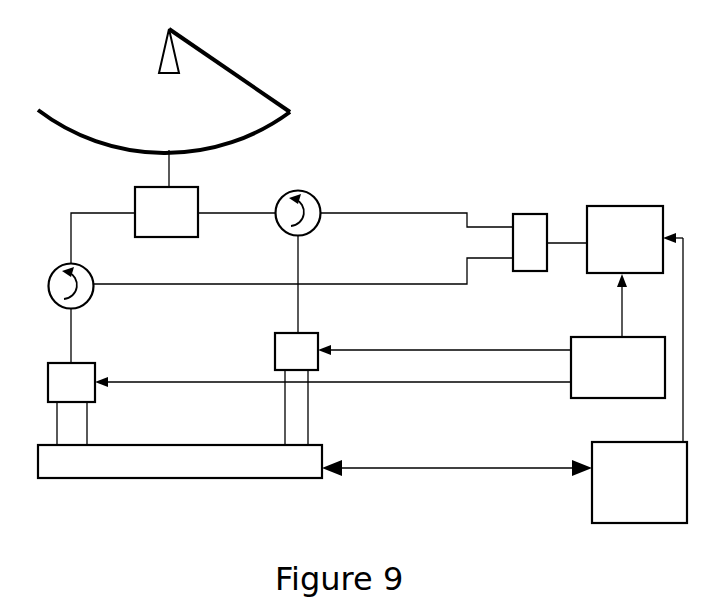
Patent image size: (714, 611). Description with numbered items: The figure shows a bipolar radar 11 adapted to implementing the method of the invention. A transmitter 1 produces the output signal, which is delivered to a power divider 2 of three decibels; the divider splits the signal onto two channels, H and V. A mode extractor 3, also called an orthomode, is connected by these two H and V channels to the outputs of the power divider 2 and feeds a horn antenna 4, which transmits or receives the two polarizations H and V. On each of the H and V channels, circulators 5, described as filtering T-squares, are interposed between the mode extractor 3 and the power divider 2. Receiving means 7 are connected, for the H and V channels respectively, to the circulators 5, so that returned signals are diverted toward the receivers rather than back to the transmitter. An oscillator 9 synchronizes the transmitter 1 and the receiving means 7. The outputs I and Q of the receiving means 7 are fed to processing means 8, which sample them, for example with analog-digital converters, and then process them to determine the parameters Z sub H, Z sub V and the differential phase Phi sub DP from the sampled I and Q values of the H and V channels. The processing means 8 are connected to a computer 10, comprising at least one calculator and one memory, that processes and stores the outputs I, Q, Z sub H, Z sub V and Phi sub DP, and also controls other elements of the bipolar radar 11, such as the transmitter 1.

The transmitter 1 is at (625, 239).
The power divider 2 is at (530, 242).
The mode extractor 3 is at (166, 212).
The horn antenna 4 is at (293, 113).
The circulators 5 is at (86, 303).
The receiving means 7 is at (184, 340).
The processing means 8 is at (103, 472).
The oscillator 9 is at (618, 367).
The computer 10 is at (639, 482).
The bipolar radar 11 is at (483, 157).